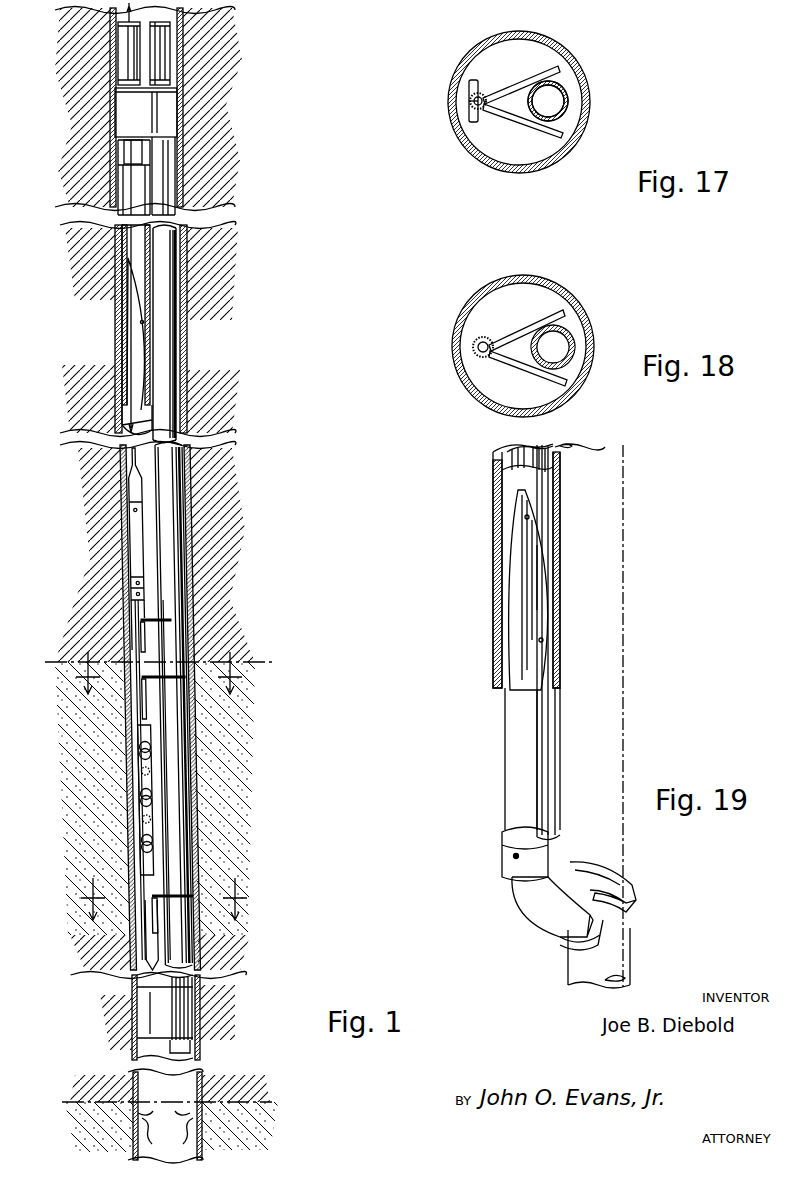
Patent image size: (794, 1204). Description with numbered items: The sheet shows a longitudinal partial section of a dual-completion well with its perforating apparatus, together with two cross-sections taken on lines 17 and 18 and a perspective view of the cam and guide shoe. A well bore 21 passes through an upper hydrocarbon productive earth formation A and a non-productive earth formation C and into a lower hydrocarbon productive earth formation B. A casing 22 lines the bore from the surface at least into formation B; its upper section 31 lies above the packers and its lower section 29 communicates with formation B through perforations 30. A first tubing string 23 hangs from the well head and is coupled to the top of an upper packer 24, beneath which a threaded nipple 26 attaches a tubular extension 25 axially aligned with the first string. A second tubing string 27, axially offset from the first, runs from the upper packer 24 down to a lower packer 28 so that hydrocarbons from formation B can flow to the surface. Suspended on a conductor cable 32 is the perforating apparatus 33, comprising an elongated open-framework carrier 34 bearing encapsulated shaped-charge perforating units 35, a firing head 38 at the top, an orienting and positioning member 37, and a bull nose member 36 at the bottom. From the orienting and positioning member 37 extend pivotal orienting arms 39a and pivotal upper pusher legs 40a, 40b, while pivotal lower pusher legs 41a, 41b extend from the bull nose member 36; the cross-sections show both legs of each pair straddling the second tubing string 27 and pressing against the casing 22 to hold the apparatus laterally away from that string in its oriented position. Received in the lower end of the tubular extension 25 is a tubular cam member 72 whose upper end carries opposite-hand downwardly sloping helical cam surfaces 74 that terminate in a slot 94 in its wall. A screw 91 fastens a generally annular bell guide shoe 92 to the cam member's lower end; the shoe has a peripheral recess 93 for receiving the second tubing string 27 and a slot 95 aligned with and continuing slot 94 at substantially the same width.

In FIG. 1, the section line 17- 17 is at (159, 661).
In FIG. 1, the section line 18- 18 is at (164, 888).
In FIG. 1, the well bore 21 is at (118, 45).
In FIG. 1, the casing 22 is at (183, 58).
In FIG. 17, the casing 22 is at (545, 42).
In FIG. 18, the casing 22 is at (552, 284).
In FIG. 1, the first tubing string 23 is at (134, 58).
In FIG. 1, the upper packer 24 is at (120, 108).
In FIG. 1, the tubular extension 25 is at (120, 190).
In FIG. 19, the tubular extension 25 is at (496, 465).
In FIG. 1, the threaded nipple 26 is at (142, 150).
In FIG. 1, the second tubing string 27 is at (164, 508).
In FIG. 17, the second tubing string 27 is at (578, 112).
In FIG. 18, the second tubing string 27 is at (578, 342).
In FIG. 1, the lower packer 28 is at (178, 1015).
In FIG. 1, the lower section of the casing 29 is at (180, 1090).
In FIG. 1, the perforations 30 is at (165, 1123).
In FIG. 1, the upper section of the casing 31 is at (172, 33).
In FIG. 1, the conductor cable 32 is at (116, 30).
In FIG. 1, the perforating apparatus 33 is at (134, 738).
In FIG. 17, the perforating apparatus 33 is at (461, 105).
In FIG. 18, the perforating apparatus 33 is at (472, 348).
In FIG. 1, the elongated carrier 34 is at (141, 780).
In FIG. 1, the perforating units 35 is at (141, 852).
In FIG. 17, the perforating units 35 is at (471, 84).
In FIG. 1, the bull nose member 36 is at (128, 944).
In FIG. 1, the orienting and positioning member 37 is at (130, 622).
In FIG. 1, the firing head 38 is at (133, 528).
In FIG. 1, the orienting arm 39a is at (153, 622).
In FIG. 1, the upper pusher leg 40a is at (183, 692).
In FIG. 17, the upper pusher leg 40a is at (570, 140).
In FIG. 17, the upper pusher leg 40b is at (560, 66).
In FIG. 1, the lower pusher leg 41a is at (175, 897).
In FIG. 18, the lower pusher leg 41a is at (576, 386).
In FIG. 18, the lower pusher leg 41b is at (560, 306).
In FIG. 1, the tubular cam member 72 is at (126, 355).
In FIG. 19, the tubular cam member 72 is at (508, 720).
In FIG. 19, the helical cam surfaces 74 is at (519, 506).
In FIG. 19, the screw 91 is at (512, 856).
In FIG. 1, the bell guide shoe 92 is at (136, 428).
In FIG. 19, the bell guide shoe 92 is at (530, 897).
In FIG. 19, the recess 93 is at (610, 896).
In FIG. 19, the slot 94 is at (548, 722).
In FIG. 19, the slot 95 is at (588, 944).
In FIG. 1, the upper hydrocarbon productive earth formation A is at (96, 778).
In FIG. 1, the lower hydrocarbon productive earth formation B is at (100, 1128).
In FIG. 1, the non-productive earth formation C is at (120, 1014).